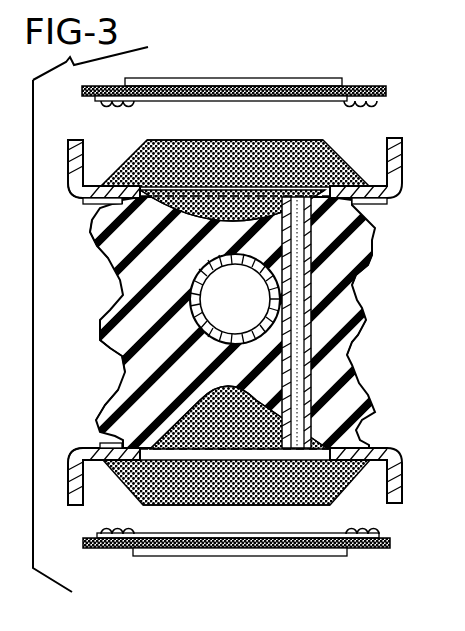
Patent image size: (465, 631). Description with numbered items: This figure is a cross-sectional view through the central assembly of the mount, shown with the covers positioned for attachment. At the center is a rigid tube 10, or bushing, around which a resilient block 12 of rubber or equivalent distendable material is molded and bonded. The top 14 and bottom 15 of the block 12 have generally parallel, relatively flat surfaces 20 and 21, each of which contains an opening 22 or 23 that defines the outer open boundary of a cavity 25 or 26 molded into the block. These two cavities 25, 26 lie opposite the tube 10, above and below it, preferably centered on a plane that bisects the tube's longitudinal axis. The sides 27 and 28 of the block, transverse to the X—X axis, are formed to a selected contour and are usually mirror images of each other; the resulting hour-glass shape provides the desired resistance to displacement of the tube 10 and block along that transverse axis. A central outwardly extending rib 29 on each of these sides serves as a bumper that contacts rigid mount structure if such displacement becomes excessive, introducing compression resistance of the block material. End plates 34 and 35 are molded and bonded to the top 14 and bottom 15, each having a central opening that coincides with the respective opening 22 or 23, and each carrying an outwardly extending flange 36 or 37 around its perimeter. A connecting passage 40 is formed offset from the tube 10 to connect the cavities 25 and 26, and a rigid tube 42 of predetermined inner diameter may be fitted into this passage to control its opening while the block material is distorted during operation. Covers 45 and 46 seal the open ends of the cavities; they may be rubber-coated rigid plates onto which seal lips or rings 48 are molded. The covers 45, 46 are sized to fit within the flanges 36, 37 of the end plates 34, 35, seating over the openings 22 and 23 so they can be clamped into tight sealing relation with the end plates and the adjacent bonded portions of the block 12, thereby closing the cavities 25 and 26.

The tube 10 is at (112, 311).
The block 12 is at (128, 277).
The top 14 is at (128, 230).
The bottom 15 is at (104, 393).
The flat surface 20 is at (120, 210).
The flat surface 21 is at (118, 437).
The opening 22 is at (160, 166).
The opening 23 is at (158, 450).
The cavity 25 is at (222, 193).
The cavity 26 is at (215, 452).
The side 27 is at (108, 350).
The side 28 is at (352, 306).
The rib 29 is at (357, 332).
The end plate 34 is at (85, 184).
The end plate 35 is at (137, 461).
The flange 36 is at (68, 150).
The flange 37 is at (389, 467).
The connecting passage 40 is at (311, 232).
The rigid tube 42 is at (312, 280).
The cover 45 is at (308, 82).
The cover 46 is at (287, 556).
The seal lips 48 is at (368, 112).